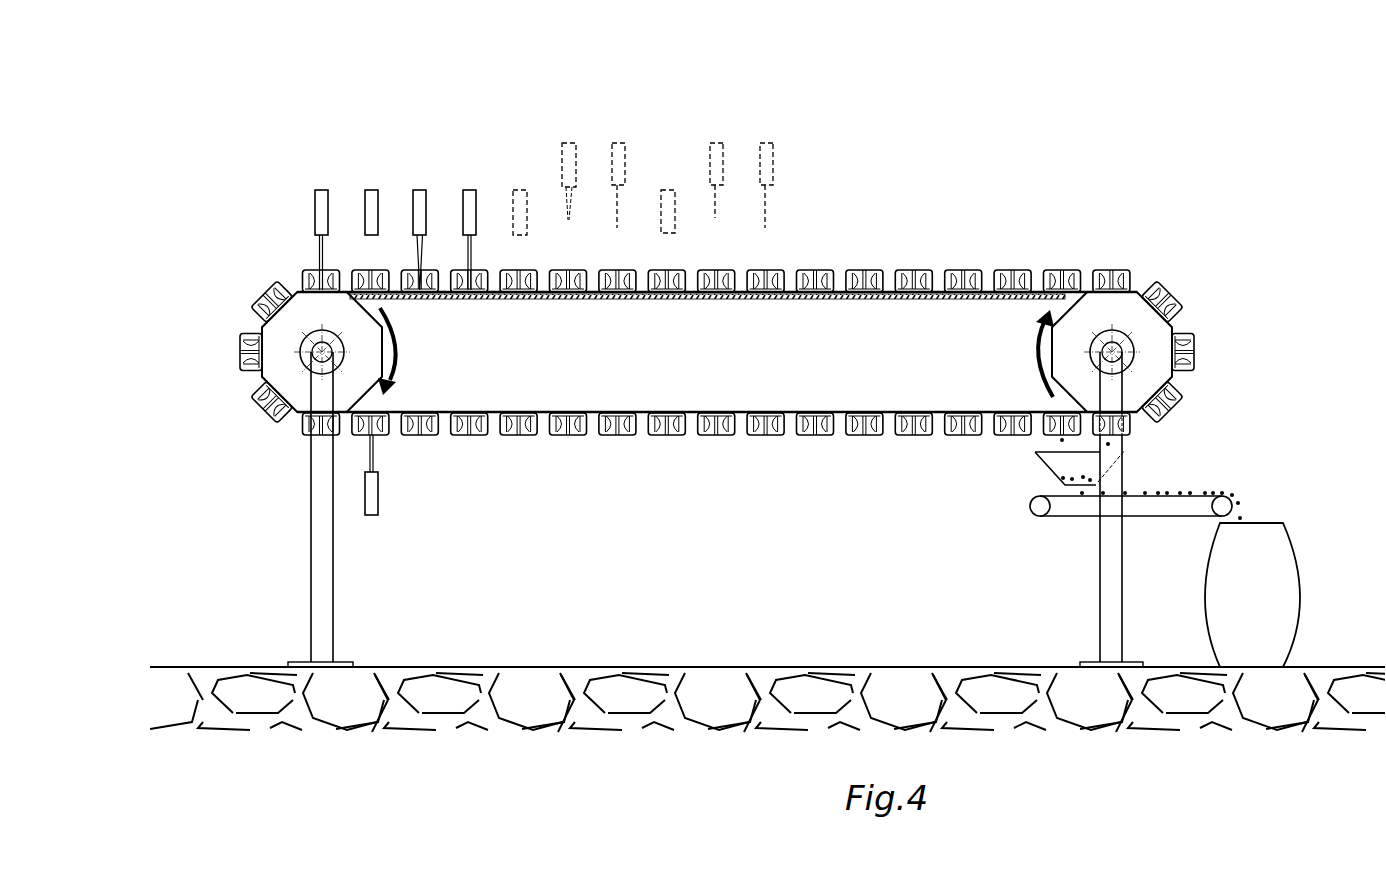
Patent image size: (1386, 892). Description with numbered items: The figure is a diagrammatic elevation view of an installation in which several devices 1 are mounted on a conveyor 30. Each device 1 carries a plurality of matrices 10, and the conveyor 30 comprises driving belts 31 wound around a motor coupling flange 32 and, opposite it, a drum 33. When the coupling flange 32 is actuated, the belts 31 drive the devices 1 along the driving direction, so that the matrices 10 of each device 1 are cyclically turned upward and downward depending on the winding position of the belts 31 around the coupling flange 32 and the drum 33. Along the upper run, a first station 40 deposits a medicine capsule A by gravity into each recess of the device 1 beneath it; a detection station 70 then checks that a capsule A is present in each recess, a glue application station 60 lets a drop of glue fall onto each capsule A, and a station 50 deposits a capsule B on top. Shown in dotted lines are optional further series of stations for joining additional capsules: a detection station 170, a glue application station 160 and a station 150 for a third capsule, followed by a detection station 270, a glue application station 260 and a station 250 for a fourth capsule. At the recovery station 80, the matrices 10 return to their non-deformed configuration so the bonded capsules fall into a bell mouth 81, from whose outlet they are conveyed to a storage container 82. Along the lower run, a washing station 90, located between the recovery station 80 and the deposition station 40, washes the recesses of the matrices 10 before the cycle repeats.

The device 1 is at (307, 260).
The matrix 10 is at (303, 272).
The conveyor 30 is at (250, 383).
The driving belt 31 is at (548, 303).
The motor coupling flange 32 is at (305, 397).
The drum 33 is at (1155, 367).
The first station 40 is at (312, 190).
The station 50 is at (460, 190).
The glue application station 60 is at (410, 190).
The detection station 70 is at (360, 190).
The recovery station 80 is at (1048, 474).
The bell mouth 81 is at (1035, 455).
The storage container 82 is at (1252, 595).
The washing station 90 is at (372, 518).
The station for depositing a third capsule 150 is at (612, 143).
The glue application station 160 is at (560, 143).
The detection station 170 is at (517, 190).
The station for depositing a fourth capsule 250 is at (760, 143).
The glue application station 260 is at (710, 143).
The detection station 270 is at (668, 188).